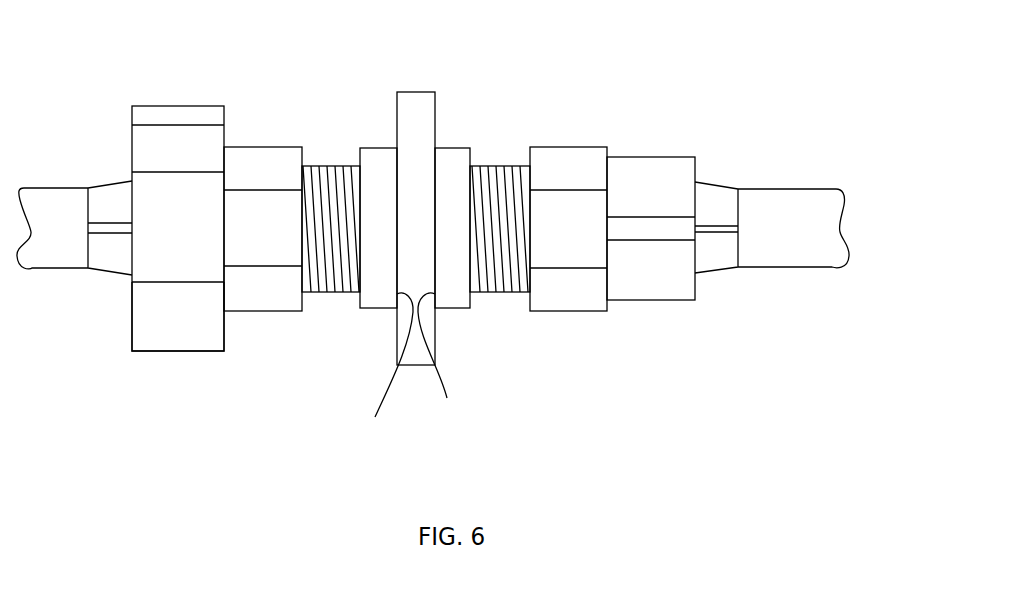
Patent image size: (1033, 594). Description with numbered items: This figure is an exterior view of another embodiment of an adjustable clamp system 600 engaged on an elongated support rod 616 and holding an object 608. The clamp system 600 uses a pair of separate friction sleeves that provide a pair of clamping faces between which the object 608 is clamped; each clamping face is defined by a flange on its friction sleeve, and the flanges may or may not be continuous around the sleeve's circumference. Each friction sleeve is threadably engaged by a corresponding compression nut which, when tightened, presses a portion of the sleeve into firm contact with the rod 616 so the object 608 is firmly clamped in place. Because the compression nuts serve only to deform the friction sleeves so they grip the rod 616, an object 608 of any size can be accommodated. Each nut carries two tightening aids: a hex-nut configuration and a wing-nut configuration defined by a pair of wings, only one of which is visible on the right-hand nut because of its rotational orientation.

The adjustable clamp system 600 is at (645, 48).
The object 608 is at (413, 92).
The rod 616 is at (67, 269).